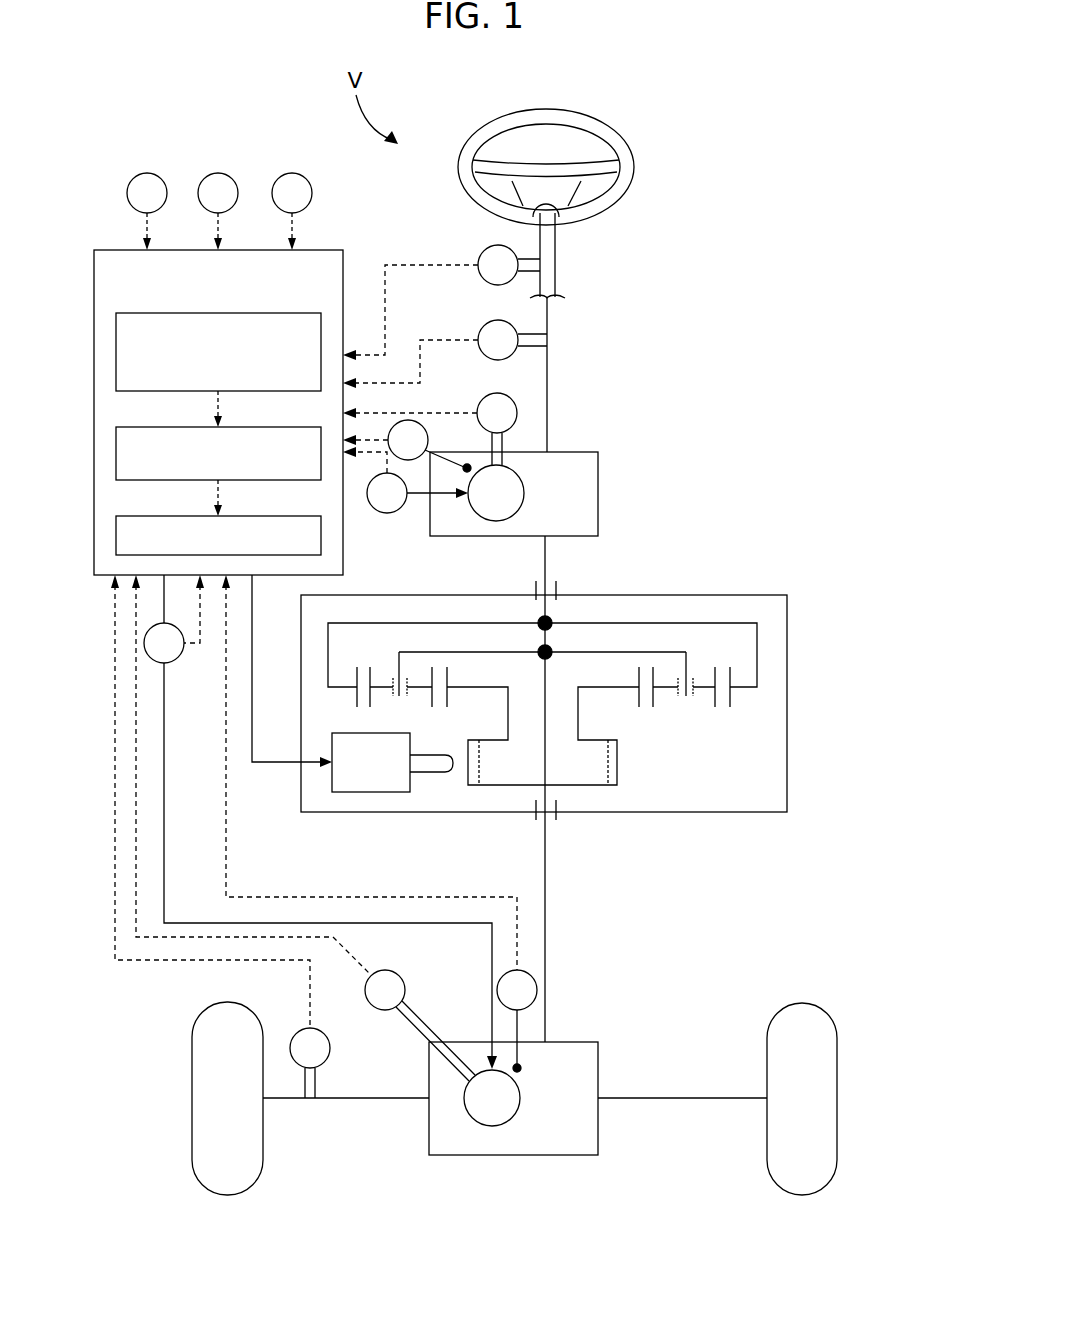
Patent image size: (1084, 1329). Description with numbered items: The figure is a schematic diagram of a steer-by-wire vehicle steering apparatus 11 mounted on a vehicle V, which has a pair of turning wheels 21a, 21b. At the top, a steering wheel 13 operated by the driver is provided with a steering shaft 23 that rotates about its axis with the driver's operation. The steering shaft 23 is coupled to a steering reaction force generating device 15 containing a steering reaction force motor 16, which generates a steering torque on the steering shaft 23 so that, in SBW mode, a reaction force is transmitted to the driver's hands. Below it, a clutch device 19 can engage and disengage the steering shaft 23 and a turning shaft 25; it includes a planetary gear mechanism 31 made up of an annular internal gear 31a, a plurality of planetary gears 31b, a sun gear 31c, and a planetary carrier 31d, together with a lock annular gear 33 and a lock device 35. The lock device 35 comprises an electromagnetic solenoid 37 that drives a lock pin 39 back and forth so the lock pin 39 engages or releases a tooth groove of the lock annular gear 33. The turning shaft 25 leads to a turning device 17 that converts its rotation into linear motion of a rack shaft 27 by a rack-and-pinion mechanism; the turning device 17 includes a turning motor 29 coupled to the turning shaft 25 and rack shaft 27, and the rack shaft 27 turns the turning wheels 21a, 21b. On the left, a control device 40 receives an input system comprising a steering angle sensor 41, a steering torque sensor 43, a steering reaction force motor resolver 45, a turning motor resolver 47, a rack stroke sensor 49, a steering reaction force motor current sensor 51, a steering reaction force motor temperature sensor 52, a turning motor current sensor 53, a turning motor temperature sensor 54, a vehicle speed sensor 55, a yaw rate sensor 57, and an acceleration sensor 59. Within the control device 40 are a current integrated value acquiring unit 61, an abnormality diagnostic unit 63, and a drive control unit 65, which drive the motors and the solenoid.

The vehicle steering apparatus 11 is at (680, 122).
The steering wheel 13 is at (634, 166).
The steering reaction force generating device 15 is at (577, 452).
The steering reaction force motor 16 is at (491, 522).
The turning device 17 is at (577, 1042).
The clutch device 19 is at (725, 595).
The turning wheel 21a is at (207, 1057).
The turning wheel 21b is at (812, 1013).
The steering shaft 23 is at (547, 381).
The turning shaft 25 is at (545, 920).
The rack shaft 27 is at (694, 1098).
The turning motor 29 is at (495, 1115).
The planetary gear mechanism 31 is at (852, 615).
The annular internal gear 31a is at (757, 637).
The planetary gears 31b is at (717, 698).
The sun gear 31c is at (637, 698).
The planetary carrier 31d is at (688, 660).
The lock annular gear 33 is at (618, 750).
The lock device 35 is at (367, 854).
The electromagnetic solenoid 37 is at (394, 777).
The lock pin 39 is at (437, 767).
The control device 40 is at (313, 250).
The steering angle sensor 41 is at (480, 252).
The steering torque sensor 43 is at (482, 325).
The steering reaction force motor resolver 45 is at (482, 398).
The turning motor resolver 47 is at (399, 974).
The rack stroke sensor 49 is at (325, 1033).
The steering reaction force motor current sensor 51 is at (388, 513).
The steering reaction force motor temperature sensor 52 is at (428, 436).
The turning motor current sensor 53 is at (183, 658).
The turning motor temperature sensor 54 is at (537, 976).
The vehicle speed sensor 55 is at (163, 180).
The yaw rate sensor 57 is at (234, 180).
The acceleration sensor 59 is at (308, 180).
The current integrated value acquiring unit 61 is at (283, 313).
The abnormality diagnostic unit 63 is at (283, 427).
The drive control unit 65 is at (283, 516).